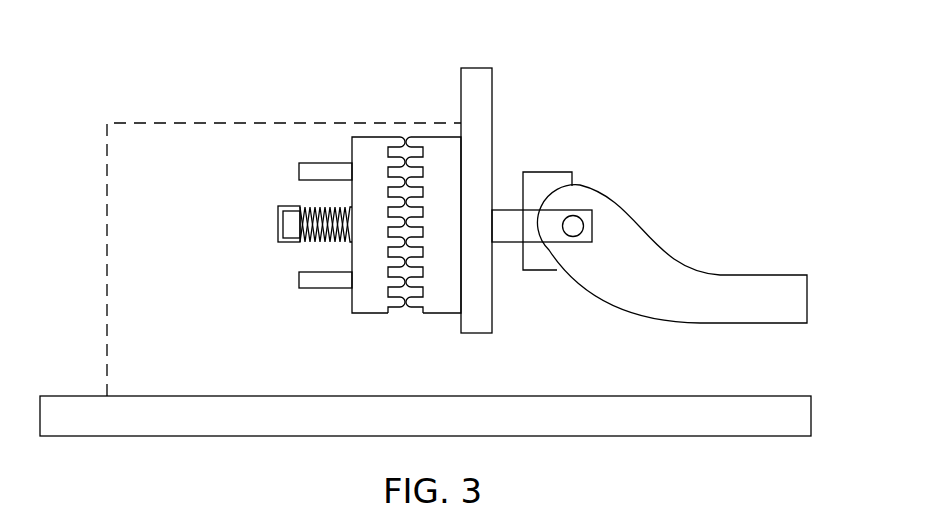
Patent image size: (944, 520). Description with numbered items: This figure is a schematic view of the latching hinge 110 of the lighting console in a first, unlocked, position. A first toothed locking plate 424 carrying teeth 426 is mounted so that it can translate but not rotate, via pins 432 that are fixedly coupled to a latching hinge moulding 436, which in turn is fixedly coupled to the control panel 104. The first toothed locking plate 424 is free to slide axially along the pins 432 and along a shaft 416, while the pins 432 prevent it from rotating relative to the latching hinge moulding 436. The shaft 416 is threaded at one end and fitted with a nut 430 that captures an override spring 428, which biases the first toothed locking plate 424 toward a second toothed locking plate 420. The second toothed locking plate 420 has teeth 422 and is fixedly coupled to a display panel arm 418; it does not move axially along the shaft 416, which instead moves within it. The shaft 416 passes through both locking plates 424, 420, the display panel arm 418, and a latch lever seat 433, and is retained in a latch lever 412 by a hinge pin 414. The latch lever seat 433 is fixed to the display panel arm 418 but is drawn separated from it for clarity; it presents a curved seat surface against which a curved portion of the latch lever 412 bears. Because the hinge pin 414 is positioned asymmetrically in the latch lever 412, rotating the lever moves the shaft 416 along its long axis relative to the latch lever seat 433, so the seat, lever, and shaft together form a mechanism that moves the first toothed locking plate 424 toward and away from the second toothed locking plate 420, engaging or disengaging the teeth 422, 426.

The control panel 104 is at (668, 408).
The latching hinge 110 is at (258, 115).
The latch lever 412 is at (800, 302).
The hinge pin 414 is at (572, 227).
The shaft 416 is at (510, 220).
The display panel arm 418 is at (483, 277).
The second toothed locking plate 420 is at (425, 215).
The teeth 422 is at (415, 298).
The first toothed locking plate 424 is at (358, 225).
The teeth 426 is at (392, 302).
The override spring 428 is at (303, 213).
The nut 430 is at (298, 240).
The pins 432 is at (318, 283).
The latch lever seat 433 is at (552, 178).
The latching hinge moulding 436 is at (107, 287).